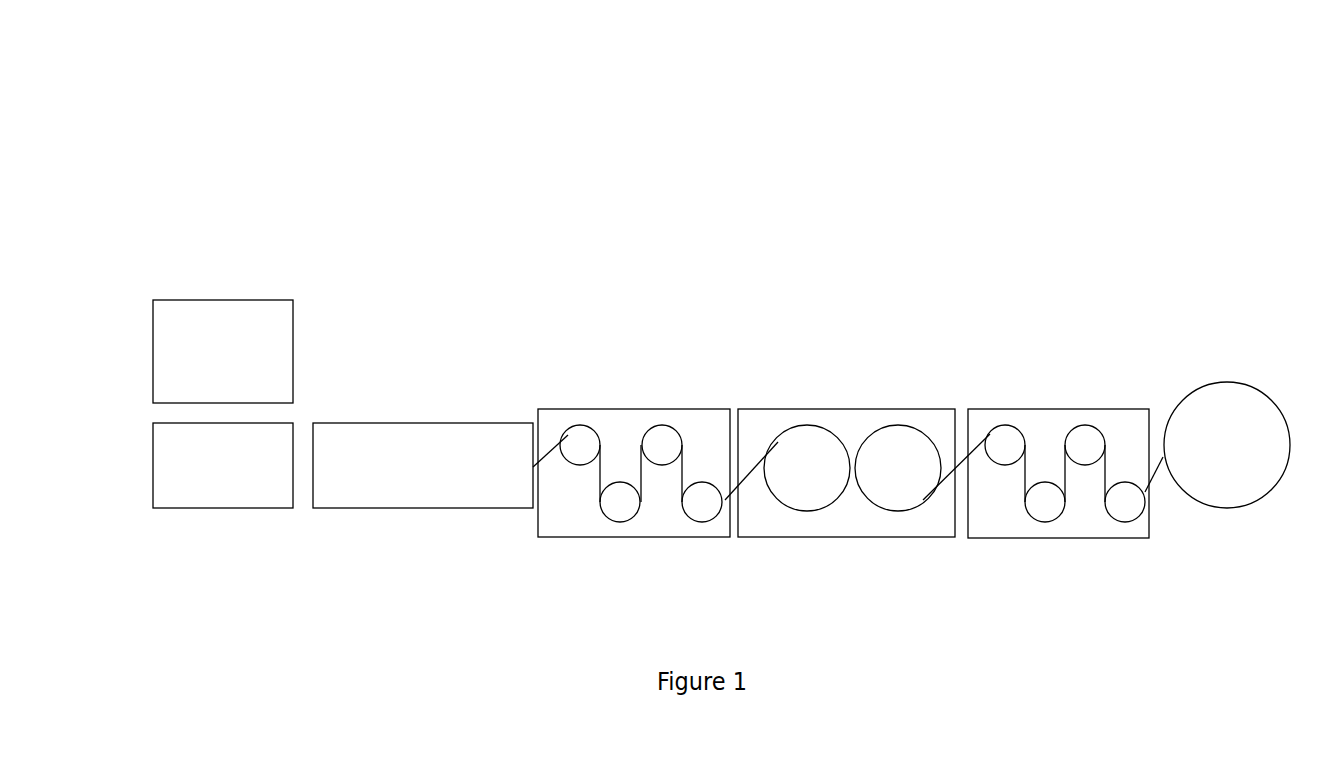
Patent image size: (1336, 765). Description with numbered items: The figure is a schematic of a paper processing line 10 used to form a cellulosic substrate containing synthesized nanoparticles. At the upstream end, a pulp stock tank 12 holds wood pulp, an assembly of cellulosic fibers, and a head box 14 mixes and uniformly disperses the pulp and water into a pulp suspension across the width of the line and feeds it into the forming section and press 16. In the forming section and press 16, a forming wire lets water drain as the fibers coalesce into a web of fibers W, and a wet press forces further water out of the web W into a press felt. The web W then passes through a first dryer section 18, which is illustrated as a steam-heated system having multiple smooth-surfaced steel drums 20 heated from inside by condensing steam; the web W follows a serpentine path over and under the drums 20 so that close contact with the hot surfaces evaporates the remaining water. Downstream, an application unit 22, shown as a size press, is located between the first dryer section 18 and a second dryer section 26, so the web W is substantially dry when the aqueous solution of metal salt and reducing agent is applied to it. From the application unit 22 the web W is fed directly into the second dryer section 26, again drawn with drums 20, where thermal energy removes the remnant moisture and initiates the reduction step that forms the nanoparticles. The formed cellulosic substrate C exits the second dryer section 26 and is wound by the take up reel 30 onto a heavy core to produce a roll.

The paper processing line 10 is at (312, 112).
The pulp stock tank 12 is at (245, 298).
The head box 14 is at (210, 504).
The forming section and press 16 is at (442, 422).
The first dryer section 18 is at (633, 407).
The steel drums 20 is at (667, 458).
The application unit 22 is at (847, 407).
The second dryer section 26 is at (1080, 408).
The take up reel 30 is at (1222, 382).
The web of fibers W is at (563, 445).
The cellulosic substrate C is at (1155, 467).